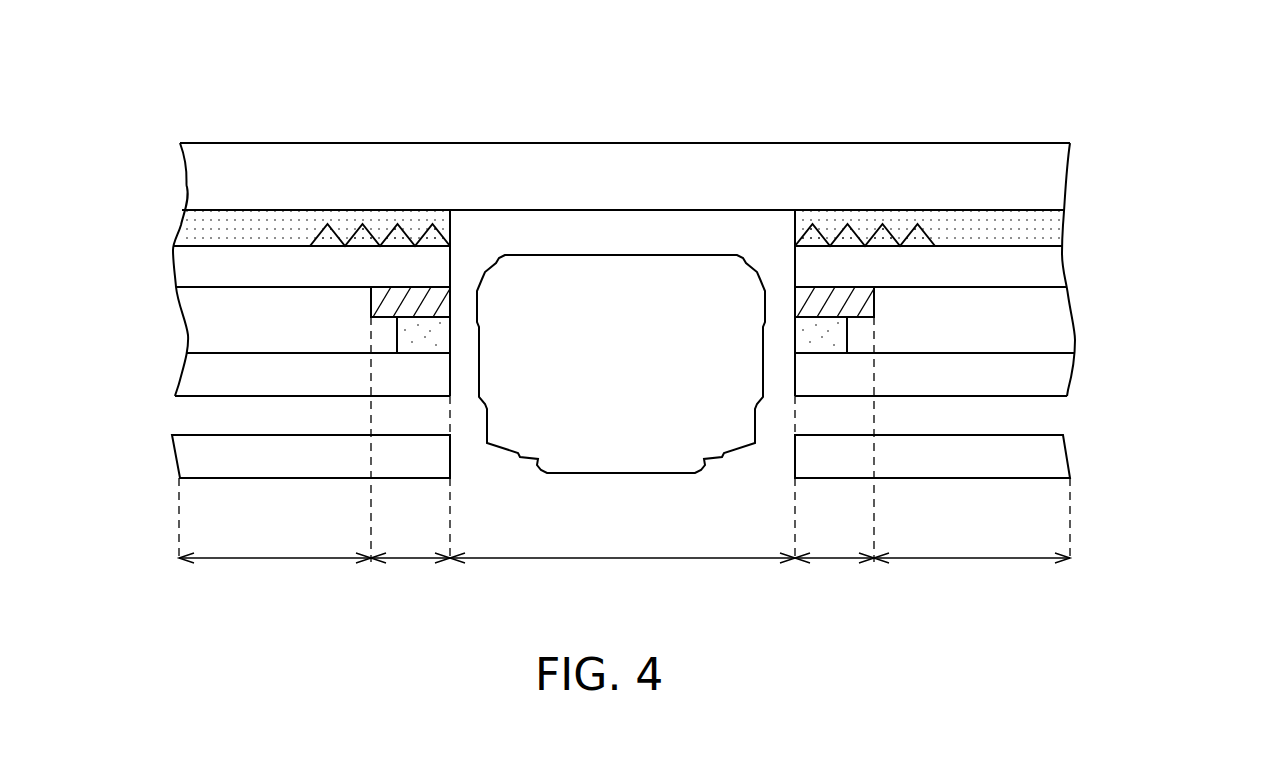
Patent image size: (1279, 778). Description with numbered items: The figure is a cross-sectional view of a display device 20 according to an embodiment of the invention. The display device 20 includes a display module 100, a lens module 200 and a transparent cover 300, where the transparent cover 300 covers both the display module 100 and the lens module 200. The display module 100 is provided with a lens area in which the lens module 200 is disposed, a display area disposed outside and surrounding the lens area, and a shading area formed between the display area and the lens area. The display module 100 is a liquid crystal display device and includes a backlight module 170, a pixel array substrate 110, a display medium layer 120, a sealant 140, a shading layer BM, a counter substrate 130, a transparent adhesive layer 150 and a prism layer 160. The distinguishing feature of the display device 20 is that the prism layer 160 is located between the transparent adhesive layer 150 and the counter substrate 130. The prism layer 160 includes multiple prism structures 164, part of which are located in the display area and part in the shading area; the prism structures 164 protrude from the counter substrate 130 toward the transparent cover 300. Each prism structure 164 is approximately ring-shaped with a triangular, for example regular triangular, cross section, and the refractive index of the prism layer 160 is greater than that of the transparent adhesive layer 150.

The display device 20 is at (1191, 622).
The display module 100 is at (668, 324).
The pixel array substrate 110 is at (1045, 380).
The display medium layer 120 is at (1052, 328).
The counter substrate 130 is at (1053, 268).
The sealant 140 is at (847, 340).
The transparent adhesive layer 150 is at (1057, 229).
The prism layer 160 is at (890, 232).
The prism structures 164 is at (785, 208).
The backlight module 170 is at (1040, 460).
The lens module 200 is at (683, 255).
The transparent cover 300 is at (1058, 160).
The shading layer BM is at (858, 300).